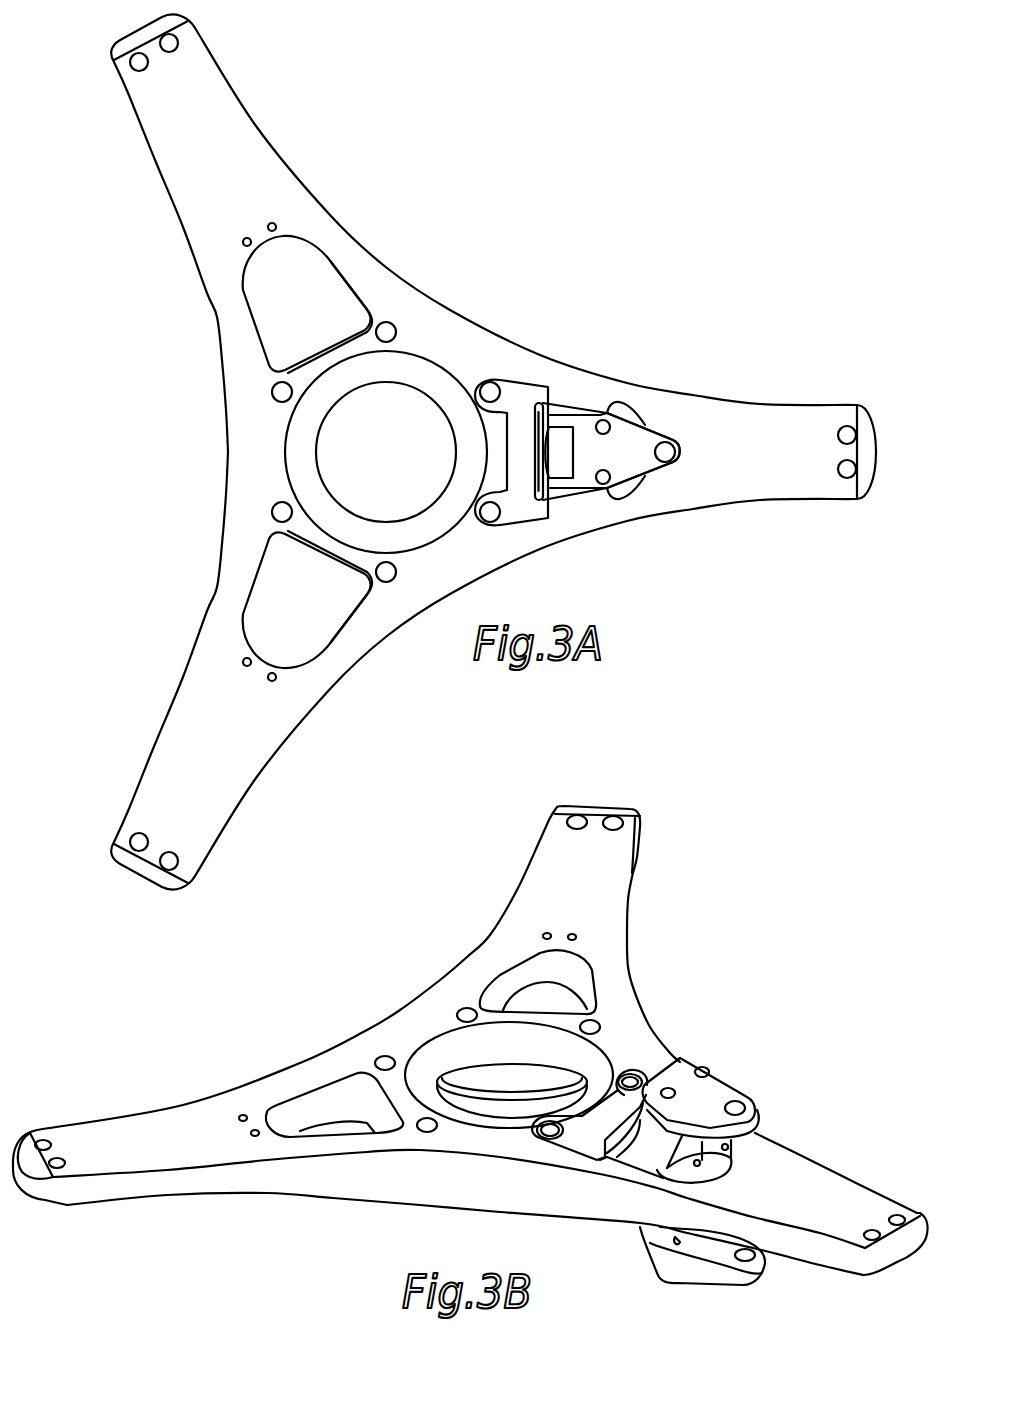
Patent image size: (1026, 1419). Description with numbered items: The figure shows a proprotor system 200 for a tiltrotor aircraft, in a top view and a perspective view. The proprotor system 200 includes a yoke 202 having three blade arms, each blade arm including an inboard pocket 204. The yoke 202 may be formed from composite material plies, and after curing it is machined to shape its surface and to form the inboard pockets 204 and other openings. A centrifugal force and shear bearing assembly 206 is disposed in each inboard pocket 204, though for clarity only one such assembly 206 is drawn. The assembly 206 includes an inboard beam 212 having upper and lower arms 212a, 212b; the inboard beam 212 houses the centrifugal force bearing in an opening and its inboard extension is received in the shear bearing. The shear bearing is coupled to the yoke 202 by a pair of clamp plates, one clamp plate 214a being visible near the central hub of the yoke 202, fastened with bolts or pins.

In FIG. 3A, the proprotor system 200 is at (626, 304).
In FIG. 3B, the proprotor system 200 is at (742, 935).
In FIG. 3A, the yoke 202 is at (420, 303).
In FIG. 3B, the yoke 202 is at (612, 893).
In FIG. 3A, the inboard pocket 204 is at (330, 268).
In FIG. 3B, the inboard pocket 204 is at (565, 960).
In FIG. 3A, the centrifugal force and shear bearing assembly 206 is at (636, 428).
In FIG. 3B, the centrifugal force and shear bearing assembly 206 is at (756, 1180).
In FIG. 3A, the inboard beam 212 is at (643, 460).
In FIG. 3B, the inboard beam 212 is at (758, 1082).
In FIG. 3B, the upper arm 212a is at (752, 1122).
In FIG. 3B, the lower arm 212b is at (710, 1273).
In FIG. 3A, the clamp plate 214a is at (513, 510).
In FIG. 3B, the clamp plate 214a is at (570, 1140).